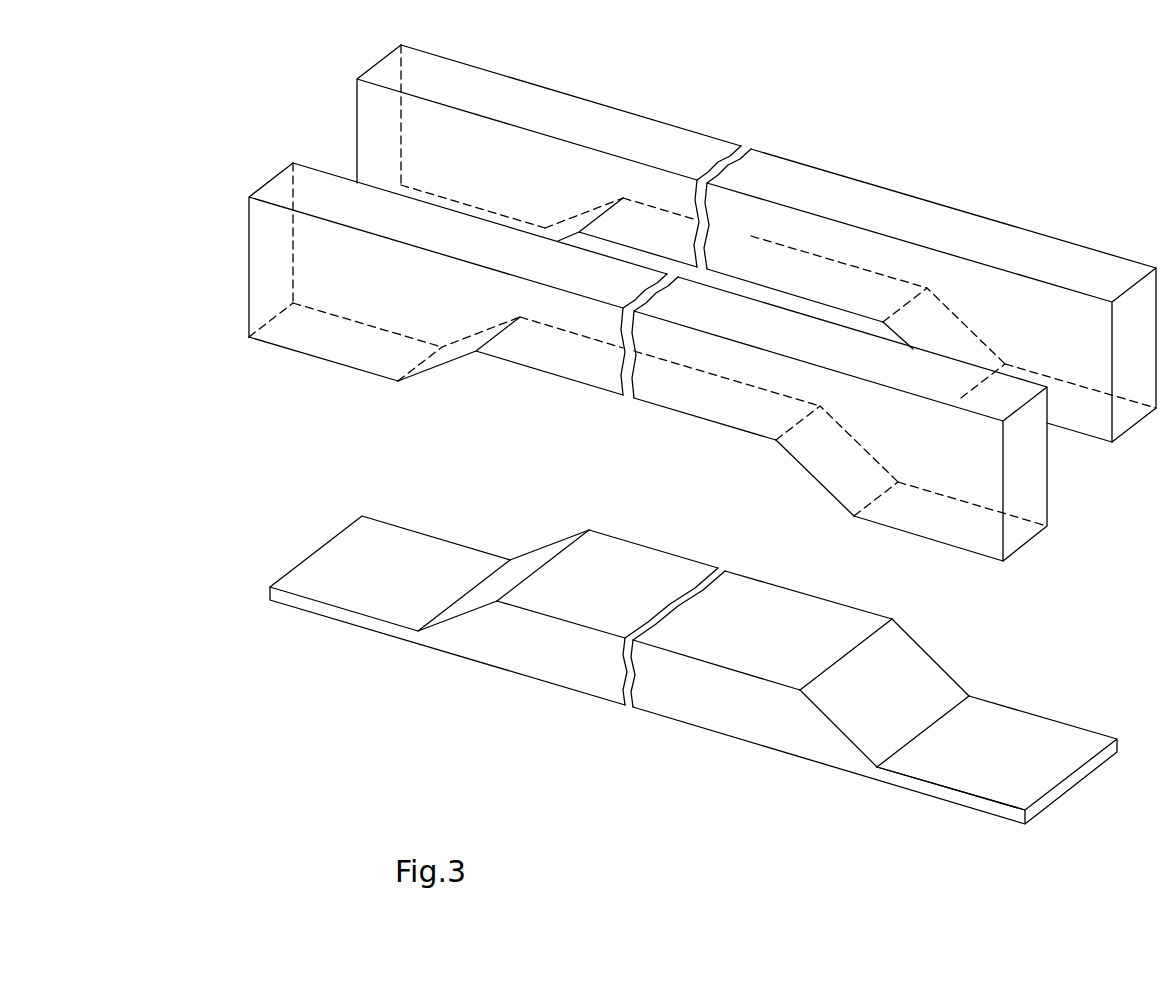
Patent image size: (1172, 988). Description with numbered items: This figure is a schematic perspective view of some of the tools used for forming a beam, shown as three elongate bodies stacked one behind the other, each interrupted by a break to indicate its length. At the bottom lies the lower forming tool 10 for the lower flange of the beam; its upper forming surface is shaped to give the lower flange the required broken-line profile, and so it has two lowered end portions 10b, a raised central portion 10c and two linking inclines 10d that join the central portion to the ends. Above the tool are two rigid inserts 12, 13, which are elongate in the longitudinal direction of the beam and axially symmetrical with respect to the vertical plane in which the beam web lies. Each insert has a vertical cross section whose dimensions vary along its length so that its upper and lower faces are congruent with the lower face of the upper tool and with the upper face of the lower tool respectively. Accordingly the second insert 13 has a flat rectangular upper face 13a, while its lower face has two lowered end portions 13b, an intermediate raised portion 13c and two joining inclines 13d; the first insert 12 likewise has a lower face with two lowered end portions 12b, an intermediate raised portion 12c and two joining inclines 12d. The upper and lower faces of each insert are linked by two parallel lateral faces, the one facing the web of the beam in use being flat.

The lower forming tool 10 is at (522, 712).
The lowered end portions 10b is at (367, 604).
The raised central portion 10c is at (778, 654).
The linking inclines 10d is at (491, 600).
The rigid insert 12 is at (222, 226).
The lowered end portions 12b is at (333, 350).
The intermediate raised portion 12c is at (646, 395).
The joining inclines 12d is at (466, 356).
The rigid insert 13 is at (647, 146).
The flat rectangular upper face 13a is at (843, 203).
The lowered end portions 13b is at (437, 197).
The intermediate raised portion 13c is at (752, 250).
The joining inclines 13d is at (580, 215).